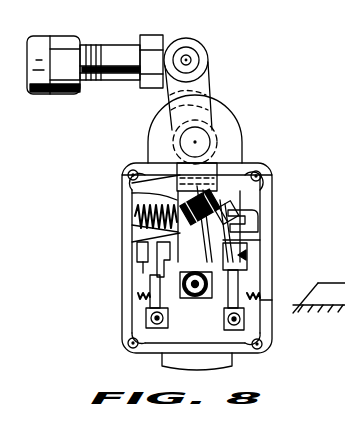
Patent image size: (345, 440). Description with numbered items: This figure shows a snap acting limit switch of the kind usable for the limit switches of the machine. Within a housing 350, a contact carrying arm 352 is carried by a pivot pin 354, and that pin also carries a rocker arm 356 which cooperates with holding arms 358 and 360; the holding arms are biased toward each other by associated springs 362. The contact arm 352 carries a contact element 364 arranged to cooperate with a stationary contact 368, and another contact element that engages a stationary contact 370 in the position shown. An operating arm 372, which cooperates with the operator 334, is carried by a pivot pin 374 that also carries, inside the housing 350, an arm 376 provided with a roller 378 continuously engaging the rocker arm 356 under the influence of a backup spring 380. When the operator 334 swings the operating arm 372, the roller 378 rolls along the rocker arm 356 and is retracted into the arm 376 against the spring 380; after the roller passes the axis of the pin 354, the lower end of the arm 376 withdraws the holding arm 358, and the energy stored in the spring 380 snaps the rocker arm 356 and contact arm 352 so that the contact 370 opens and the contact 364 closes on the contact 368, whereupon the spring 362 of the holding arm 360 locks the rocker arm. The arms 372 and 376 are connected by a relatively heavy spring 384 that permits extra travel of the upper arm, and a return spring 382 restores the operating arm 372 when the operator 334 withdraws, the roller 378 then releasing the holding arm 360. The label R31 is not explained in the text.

The operator 334 is at (90, 48).
The operating arm 372 is at (208, 86).
The pivot pin 374 is at (207, 137).
The spring 384 is at (223, 145).
The contact carrying arm 352 is at (237, 165).
The arm 376 is at (133, 167).
The contact element 364 is at (132, 192).
The stationary contact 368 is at (137, 213).
The return spring 382 is at (132, 224).
The backup spring 380 is at (132, 243).
The holding arm 358 is at (150, 283).
The spring 362 is at (130, 305).
The pivot pin 354 is at (195, 295).
The stationary contact 370 is at (237, 205).
The contact relay R31 is at (268, 206).
The housing 350 is at (268, 232).
The roller 378 is at (247, 255).
The rocker arm 356 is at (247, 287).
The holding arm 360 is at (273, 317).